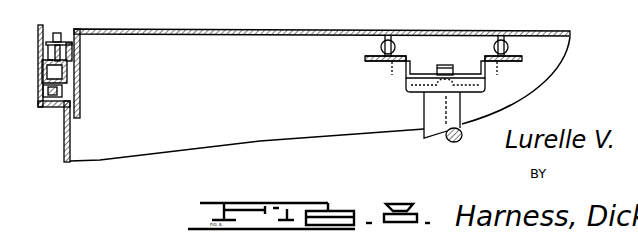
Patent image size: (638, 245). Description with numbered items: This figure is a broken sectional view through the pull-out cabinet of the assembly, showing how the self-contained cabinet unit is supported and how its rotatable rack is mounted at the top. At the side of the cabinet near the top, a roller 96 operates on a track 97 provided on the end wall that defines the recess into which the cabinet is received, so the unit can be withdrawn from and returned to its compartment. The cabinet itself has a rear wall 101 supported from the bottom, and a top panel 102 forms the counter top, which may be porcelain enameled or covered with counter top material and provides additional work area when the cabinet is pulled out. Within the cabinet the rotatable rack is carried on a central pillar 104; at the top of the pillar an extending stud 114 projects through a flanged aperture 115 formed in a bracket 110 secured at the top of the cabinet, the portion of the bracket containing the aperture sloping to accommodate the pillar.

The roller 96 is at (58, 33).
The track 97 is at (68, 75).
The rear wall 101 is at (276, 103).
The top panel 102 is at (553, 31).
The central pillar 104 is at (437, 110).
The bracket 110 is at (396, 57).
The extending stud 114 is at (447, 64).
The flanged aperture 115 is at (468, 82).